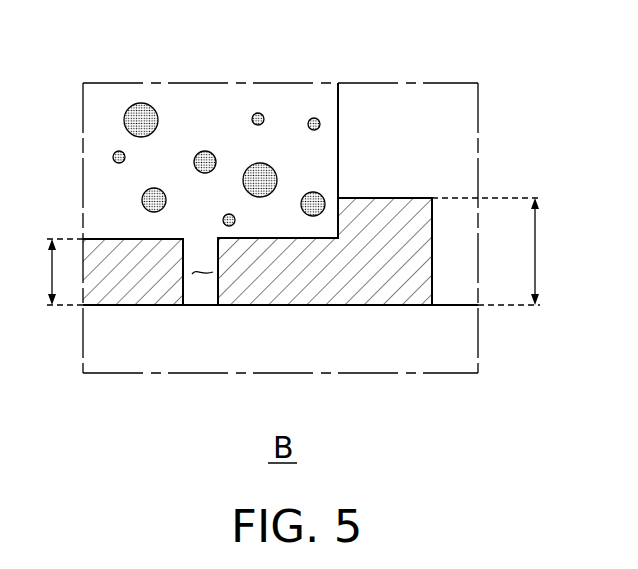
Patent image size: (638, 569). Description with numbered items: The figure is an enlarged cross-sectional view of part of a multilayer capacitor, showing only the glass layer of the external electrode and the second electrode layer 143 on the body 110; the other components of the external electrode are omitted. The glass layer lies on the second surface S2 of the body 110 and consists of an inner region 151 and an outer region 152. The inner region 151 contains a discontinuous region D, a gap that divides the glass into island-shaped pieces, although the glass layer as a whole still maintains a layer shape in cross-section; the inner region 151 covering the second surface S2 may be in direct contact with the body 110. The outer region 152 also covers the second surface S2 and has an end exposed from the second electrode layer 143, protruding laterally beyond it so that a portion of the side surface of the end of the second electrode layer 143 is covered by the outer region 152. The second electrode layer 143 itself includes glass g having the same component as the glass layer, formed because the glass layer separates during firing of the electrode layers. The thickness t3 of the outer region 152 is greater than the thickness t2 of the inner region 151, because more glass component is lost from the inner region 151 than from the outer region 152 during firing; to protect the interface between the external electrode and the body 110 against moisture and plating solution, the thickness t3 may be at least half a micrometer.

The second electrode layer 143 is at (272, 93).
The inner region 151 is at (130, 293).
The outer region 152 is at (377, 277).
The body 110 is at (245, 333).
The discontinuous region D is at (205, 277).
The glass g is at (120, 205).
The second surface S2 is at (455, 305).
The thickness of the inner region covering the second surface t2 is at (54, 272).
The thickness of the outer region t3 is at (500, 251).